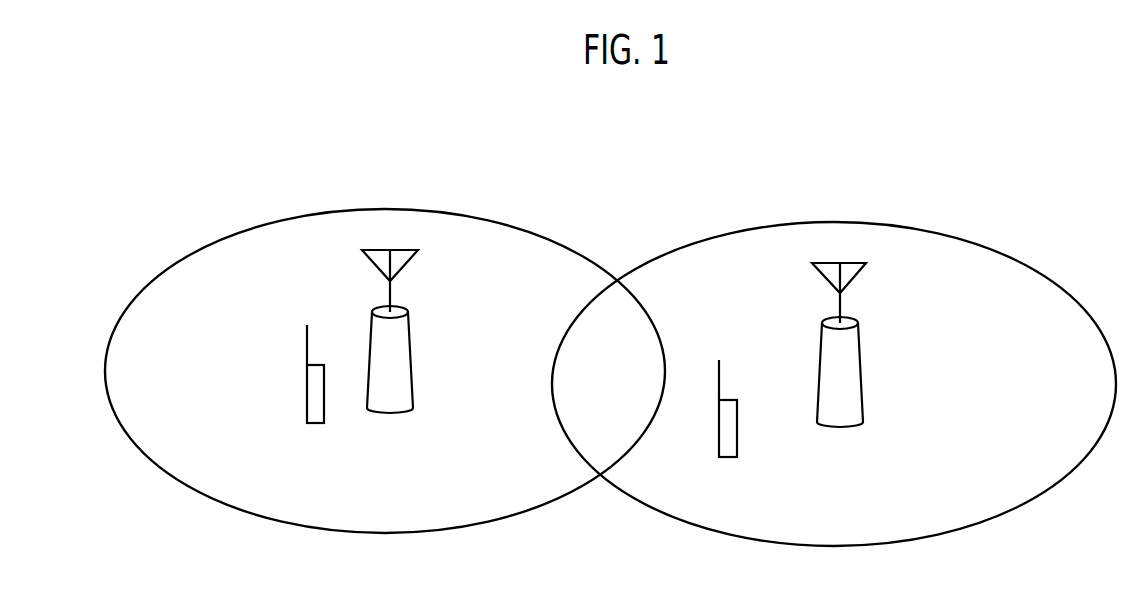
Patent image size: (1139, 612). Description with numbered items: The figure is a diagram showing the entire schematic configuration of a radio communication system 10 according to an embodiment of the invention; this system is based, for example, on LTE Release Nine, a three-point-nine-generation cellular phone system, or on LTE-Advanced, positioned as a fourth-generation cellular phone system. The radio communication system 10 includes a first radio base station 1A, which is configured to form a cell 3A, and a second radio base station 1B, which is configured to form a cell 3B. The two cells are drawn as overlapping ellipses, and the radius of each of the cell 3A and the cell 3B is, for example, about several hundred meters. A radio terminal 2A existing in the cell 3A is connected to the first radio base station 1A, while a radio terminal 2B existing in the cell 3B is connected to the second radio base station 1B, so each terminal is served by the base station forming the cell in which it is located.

The radio communication system 10 is at (1093, 117).
The first radio base station 1A is at (409, 318).
The second radio base station 1B is at (859, 332).
The radio terminal 2A is at (305, 398).
The radio terminal 2B is at (739, 438).
The cell 3A is at (143, 290).
The cell 3B is at (1080, 304).